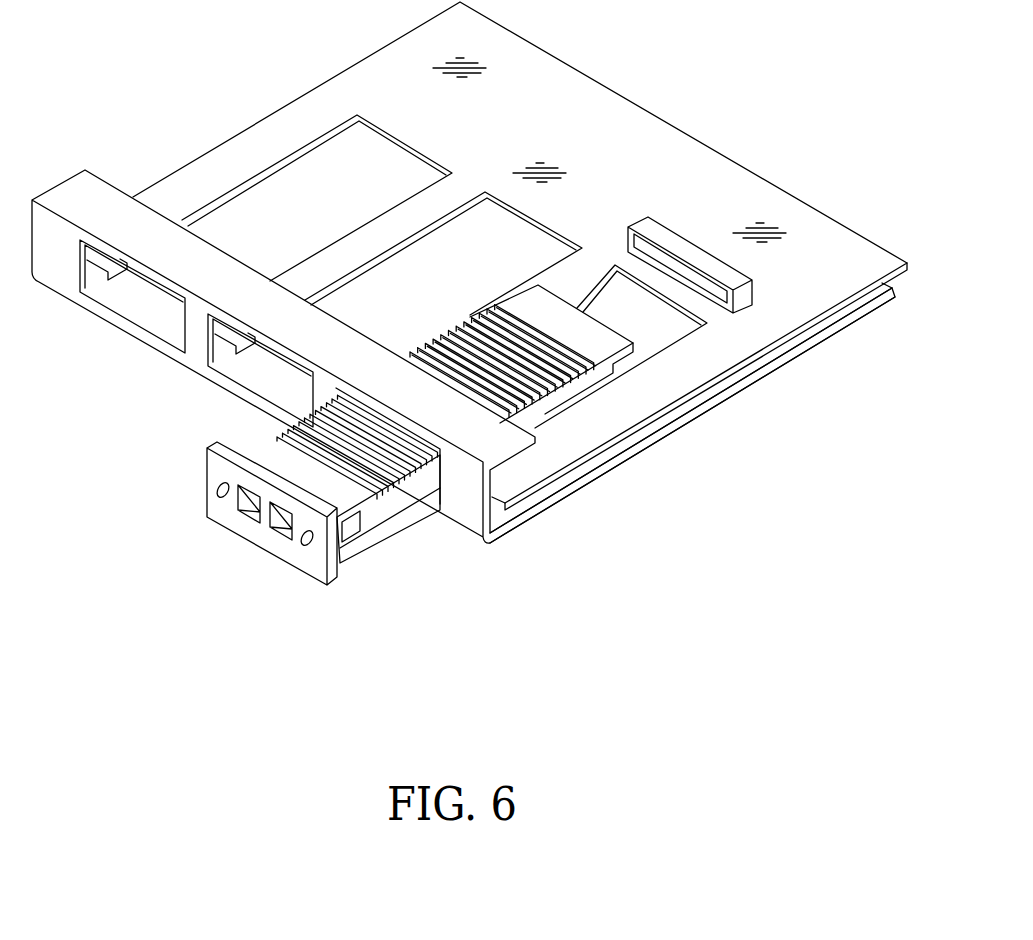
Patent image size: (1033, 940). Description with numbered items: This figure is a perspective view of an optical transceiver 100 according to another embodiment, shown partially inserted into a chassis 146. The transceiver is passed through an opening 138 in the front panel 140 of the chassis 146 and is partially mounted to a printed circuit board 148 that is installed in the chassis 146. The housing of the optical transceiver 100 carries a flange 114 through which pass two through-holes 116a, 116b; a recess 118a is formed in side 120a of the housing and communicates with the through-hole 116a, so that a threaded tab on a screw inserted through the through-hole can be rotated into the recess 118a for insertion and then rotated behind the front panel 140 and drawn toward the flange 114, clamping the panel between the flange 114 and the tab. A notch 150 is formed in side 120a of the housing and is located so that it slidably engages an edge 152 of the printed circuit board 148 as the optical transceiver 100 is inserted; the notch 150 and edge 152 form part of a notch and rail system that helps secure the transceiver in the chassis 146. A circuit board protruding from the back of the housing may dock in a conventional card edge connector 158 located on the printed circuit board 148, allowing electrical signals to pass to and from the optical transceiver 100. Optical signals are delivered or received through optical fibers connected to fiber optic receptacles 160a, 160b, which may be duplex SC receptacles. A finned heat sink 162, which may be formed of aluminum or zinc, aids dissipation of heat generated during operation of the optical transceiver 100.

The optical transceiver 100 is at (469, 339).
The flange 114 is at (225, 531).
The through-hole 116a is at (307, 548).
The through-hole 116b is at (213, 492).
The recess 118a is at (353, 557).
The side 120a is at (393, 543).
The opening 138 is at (295, 420).
The front panel 140 is at (473, 523).
The chassis 146 is at (693, 421).
The printed circuit board 148 is at (730, 160).
The notch 150 is at (399, 547).
The edge 152 is at (686, 345).
The card edge connector 158 is at (647, 217).
The fiber optic receptacle 160a is at (280, 540).
The fiber optic receptacle 160b is at (243, 513).
The finned heat sink 162 is at (557, 392).